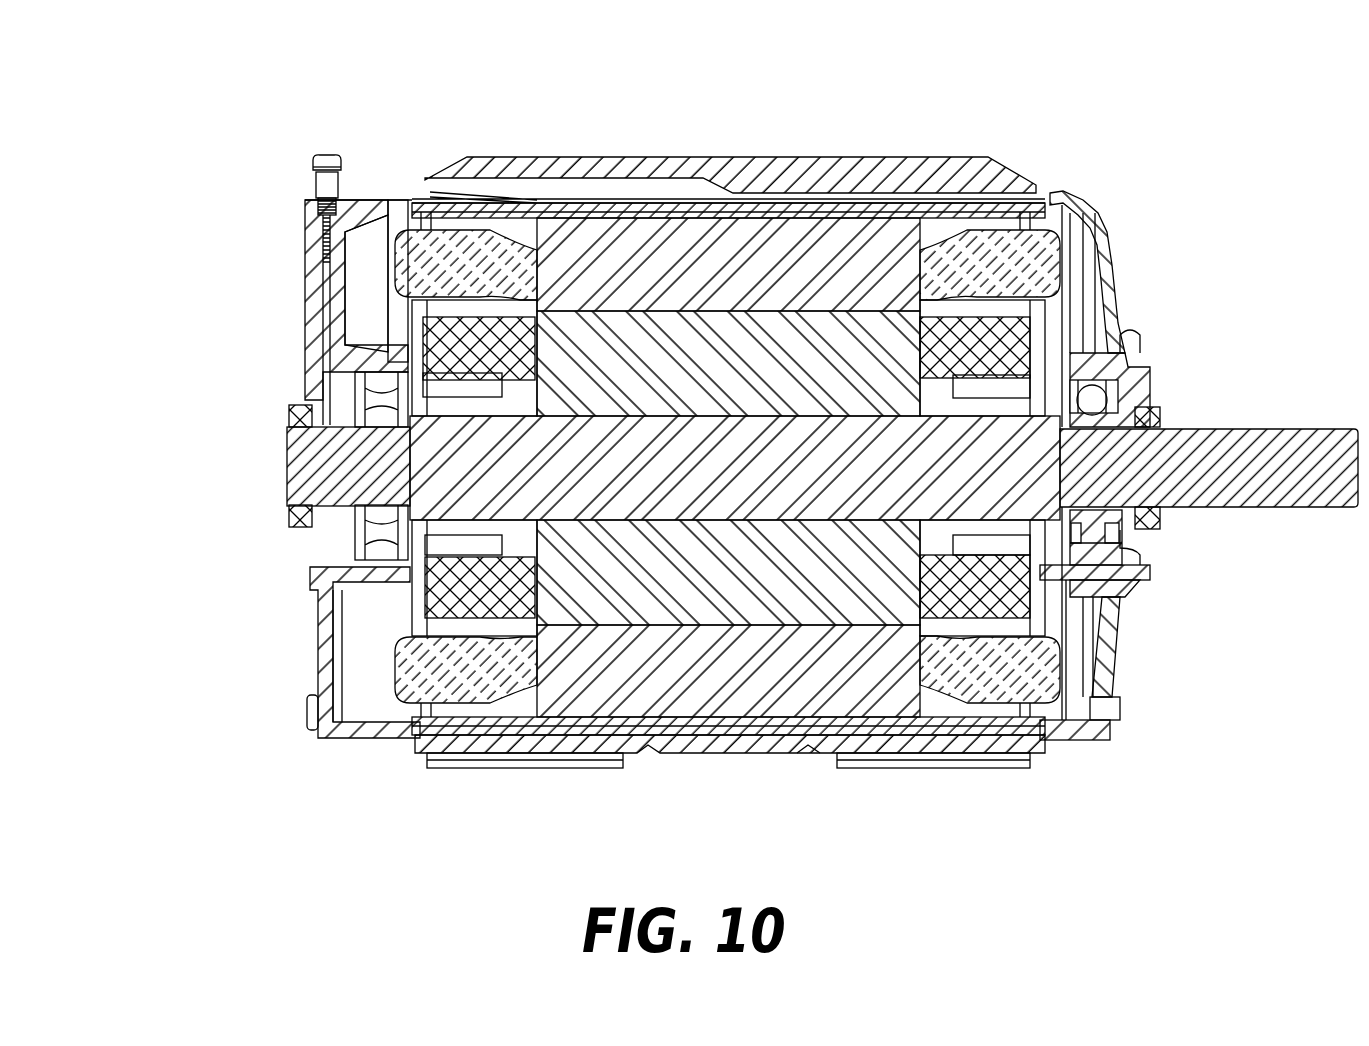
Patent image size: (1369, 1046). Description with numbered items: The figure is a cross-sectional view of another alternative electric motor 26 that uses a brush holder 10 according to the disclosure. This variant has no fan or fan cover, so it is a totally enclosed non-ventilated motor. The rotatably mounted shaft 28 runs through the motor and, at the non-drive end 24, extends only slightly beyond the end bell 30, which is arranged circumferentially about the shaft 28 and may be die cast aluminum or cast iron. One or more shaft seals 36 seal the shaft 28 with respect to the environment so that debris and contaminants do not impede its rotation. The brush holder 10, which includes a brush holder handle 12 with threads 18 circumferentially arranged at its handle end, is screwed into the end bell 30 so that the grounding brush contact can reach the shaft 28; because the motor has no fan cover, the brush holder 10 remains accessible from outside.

The brush holder 10 is at (326, 156).
The brush holder handle 12 is at (332, 186).
The threads 18 is at (310, 200).
The non-drive end 24 is at (108, 322).
The electric motor 26 is at (900, 162).
The shaft 28 is at (1233, 495).
The end bell 30 is at (388, 205).
The shaft seals 36 is at (294, 404).